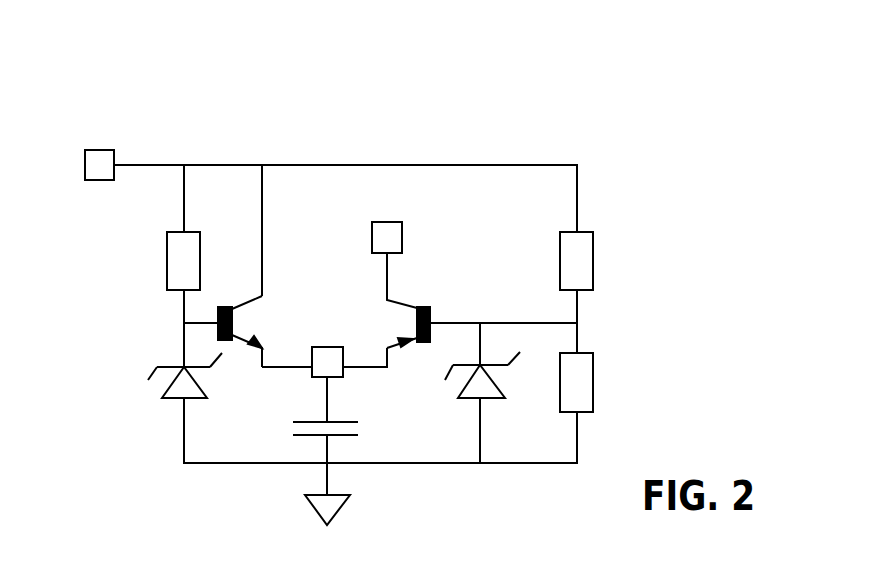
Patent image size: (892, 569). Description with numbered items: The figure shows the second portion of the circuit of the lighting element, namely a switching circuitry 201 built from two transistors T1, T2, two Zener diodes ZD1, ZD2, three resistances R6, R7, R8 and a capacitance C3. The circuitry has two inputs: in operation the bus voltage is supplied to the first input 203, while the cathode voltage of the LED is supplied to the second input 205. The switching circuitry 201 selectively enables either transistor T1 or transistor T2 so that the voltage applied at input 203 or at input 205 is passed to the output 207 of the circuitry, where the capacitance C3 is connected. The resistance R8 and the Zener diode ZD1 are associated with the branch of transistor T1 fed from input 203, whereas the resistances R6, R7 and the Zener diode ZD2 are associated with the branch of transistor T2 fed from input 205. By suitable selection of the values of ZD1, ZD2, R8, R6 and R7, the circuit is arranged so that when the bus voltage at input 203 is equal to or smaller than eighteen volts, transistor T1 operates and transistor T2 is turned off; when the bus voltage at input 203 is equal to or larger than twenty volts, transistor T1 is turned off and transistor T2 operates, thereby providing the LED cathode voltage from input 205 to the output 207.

The switching circuitry 201 is at (591, 133).
The first input 203 is at (101, 150).
The second input 205 is at (402, 225).
The output 207 is at (328, 347).
The resistance R6 is at (597, 261).
The resistance R7 is at (597, 382).
The resistance R8 is at (164, 261).
The transistor T1 is at (223, 319).
The transistor T2 is at (482, 310).
The Zener diode ZD1 is at (161, 383).
The Zener diode ZD2 is at (462, 393).
The capacitance C3 is at (305, 451).